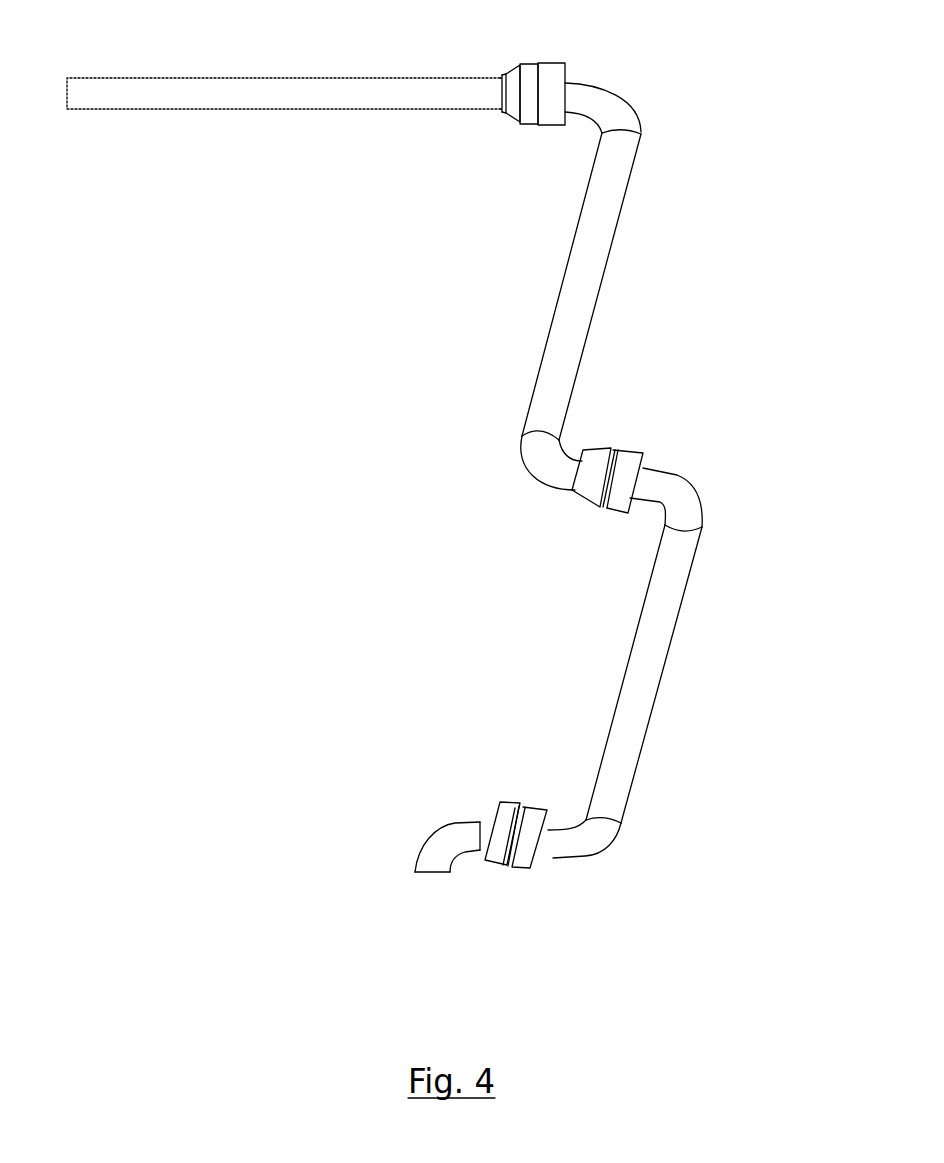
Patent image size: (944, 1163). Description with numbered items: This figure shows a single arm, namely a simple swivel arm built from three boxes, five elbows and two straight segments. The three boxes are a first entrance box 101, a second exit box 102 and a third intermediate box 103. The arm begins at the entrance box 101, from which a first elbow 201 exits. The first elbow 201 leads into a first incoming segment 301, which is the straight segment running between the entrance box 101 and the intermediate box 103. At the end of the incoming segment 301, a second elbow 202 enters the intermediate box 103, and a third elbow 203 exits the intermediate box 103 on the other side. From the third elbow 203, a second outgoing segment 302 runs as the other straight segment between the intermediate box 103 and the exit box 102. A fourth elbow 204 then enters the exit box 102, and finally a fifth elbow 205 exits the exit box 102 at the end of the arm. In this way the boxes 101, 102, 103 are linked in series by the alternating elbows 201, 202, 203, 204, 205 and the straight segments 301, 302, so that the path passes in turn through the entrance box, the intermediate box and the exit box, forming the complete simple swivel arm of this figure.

The entrance box 101 is at (538, 120).
The exit box 102 is at (525, 848).
The intermediate box 103 is at (595, 488).
The first elbow 201 is at (607, 110).
The second elbow 202 is at (540, 455).
The third elbow 203 is at (672, 497).
The fourth elbow 204 is at (582, 838).
The fifth elbow 205 is at (450, 852).
The first incoming segment 301 is at (577, 292).
The second outgoing segment 302 is at (633, 695).